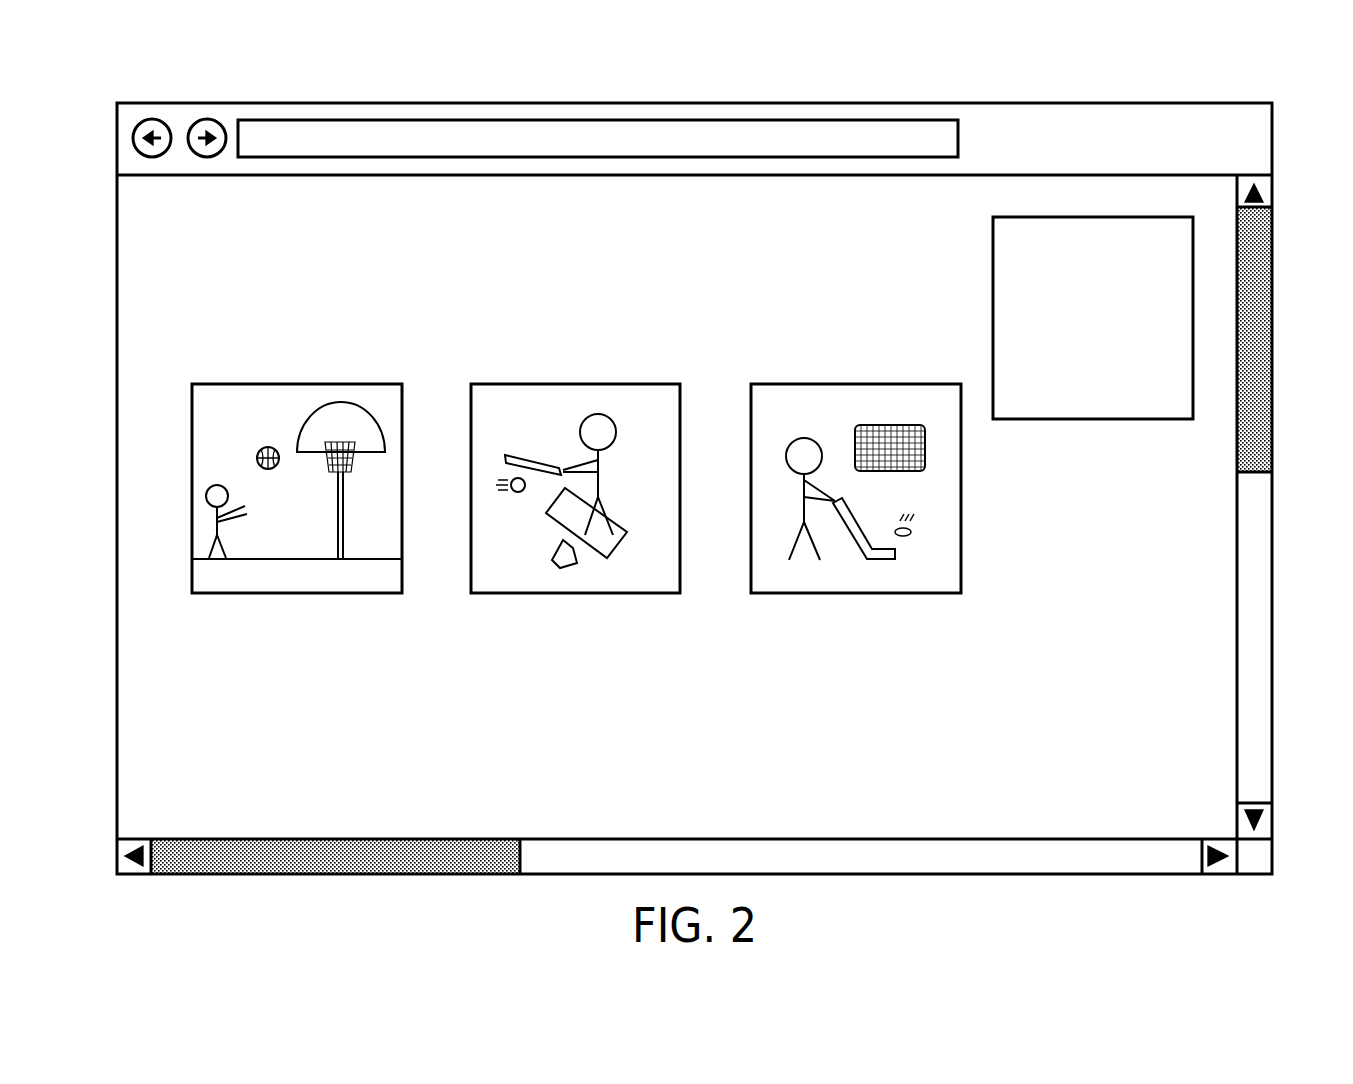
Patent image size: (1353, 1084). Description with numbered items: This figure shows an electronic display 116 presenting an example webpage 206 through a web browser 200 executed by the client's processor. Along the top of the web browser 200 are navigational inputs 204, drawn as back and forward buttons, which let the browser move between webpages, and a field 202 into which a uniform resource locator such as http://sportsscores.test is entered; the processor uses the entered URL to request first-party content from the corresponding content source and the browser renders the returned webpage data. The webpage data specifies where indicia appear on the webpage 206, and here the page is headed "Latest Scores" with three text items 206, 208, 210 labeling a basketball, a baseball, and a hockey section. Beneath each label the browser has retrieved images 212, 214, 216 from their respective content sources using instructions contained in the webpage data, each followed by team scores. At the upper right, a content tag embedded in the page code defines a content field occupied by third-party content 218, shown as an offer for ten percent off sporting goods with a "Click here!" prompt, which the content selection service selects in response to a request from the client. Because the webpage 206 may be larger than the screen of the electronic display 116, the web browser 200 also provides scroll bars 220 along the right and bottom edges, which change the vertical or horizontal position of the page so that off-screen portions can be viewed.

The electronic display 116 is at (117, 266).
The web browser 200 is at (128, 121).
The field 202 is at (531, 127).
The inputs 204 is at (152, 119).
The webpage 206 is at (236, 357).
The text 208 is at (518, 352).
The text 210 is at (811, 352).
The image 212 is at (427, 405).
The image 214 is at (707, 404).
The image 216 is at (962, 572).
The third-party content 218 is at (1003, 292).
The scroll bars 220 is at (1273, 320).